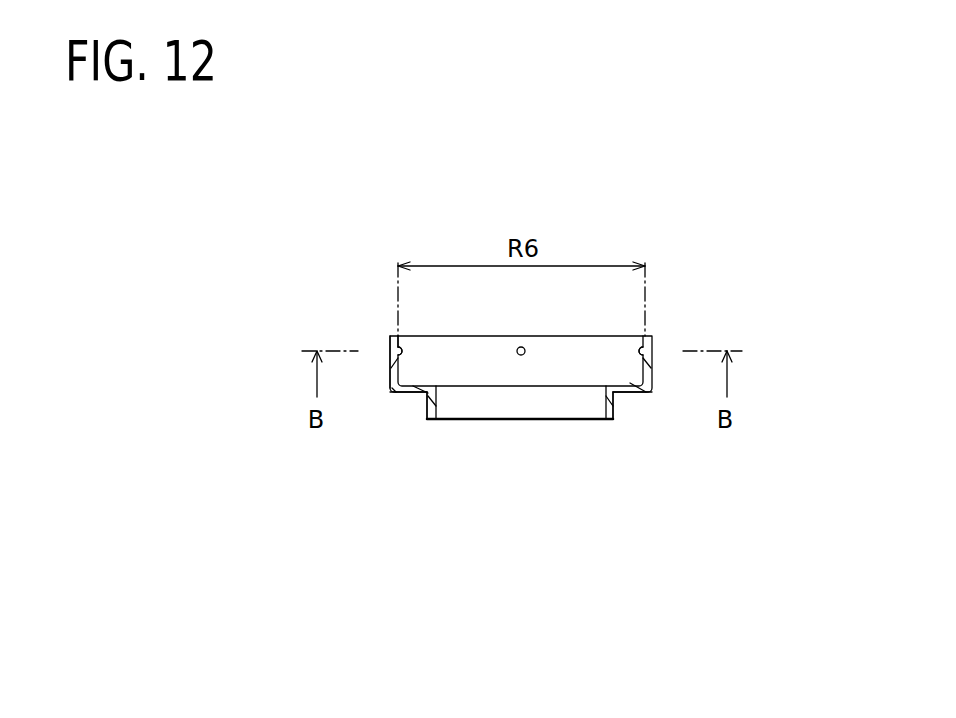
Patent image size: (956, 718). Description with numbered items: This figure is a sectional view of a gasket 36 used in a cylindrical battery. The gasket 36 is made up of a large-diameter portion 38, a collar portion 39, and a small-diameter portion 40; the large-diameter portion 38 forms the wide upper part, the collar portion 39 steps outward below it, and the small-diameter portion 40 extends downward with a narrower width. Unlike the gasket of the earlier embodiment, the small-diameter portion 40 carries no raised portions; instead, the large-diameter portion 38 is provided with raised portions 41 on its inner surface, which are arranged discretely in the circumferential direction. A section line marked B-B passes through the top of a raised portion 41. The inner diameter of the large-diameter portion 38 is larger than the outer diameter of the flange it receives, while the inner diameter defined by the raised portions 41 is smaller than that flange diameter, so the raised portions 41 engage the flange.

The gasket 36 is at (668, 302).
The large-diameter portion 38 is at (390, 343).
The collar portion 39 is at (412, 392).
The small-diameter portion 40 is at (428, 412).
The raised portions 41 is at (524, 347).